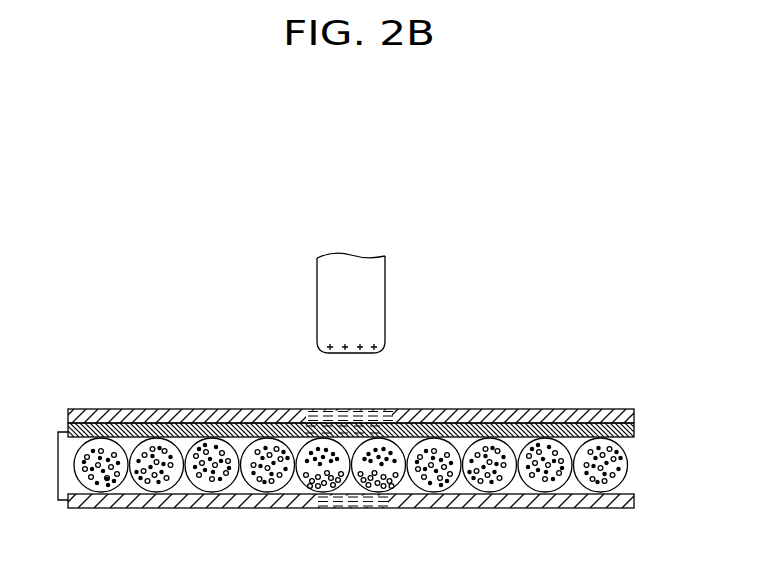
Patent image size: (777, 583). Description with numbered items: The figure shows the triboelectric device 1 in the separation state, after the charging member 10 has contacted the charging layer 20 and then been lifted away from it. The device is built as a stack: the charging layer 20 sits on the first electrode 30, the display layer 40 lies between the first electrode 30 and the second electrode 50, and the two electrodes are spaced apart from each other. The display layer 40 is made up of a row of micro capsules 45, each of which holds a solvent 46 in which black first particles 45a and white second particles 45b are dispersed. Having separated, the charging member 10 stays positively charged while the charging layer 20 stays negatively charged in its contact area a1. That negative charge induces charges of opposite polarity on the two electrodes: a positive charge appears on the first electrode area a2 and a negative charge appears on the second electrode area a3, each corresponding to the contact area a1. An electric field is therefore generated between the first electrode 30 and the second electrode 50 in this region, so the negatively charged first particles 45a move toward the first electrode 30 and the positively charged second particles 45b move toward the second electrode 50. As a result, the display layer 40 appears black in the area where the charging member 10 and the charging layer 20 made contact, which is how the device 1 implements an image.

The triboelectric device 1 is at (653, 320).
The charging member 10 is at (385, 273).
The charging layer 20 is at (634, 416).
The first electrode 30 is at (634, 431).
The display layer 40 is at (388, 460).
The micro capsule 45 is at (295, 494).
The first particles 45a is at (414, 409).
The second particles 45b is at (406, 494).
The solvent 46 is at (106, 490).
The second electrode 50 is at (634, 500).
The contact area a1 is at (320, 410).
The first electrode area a2 is at (290, 411).
The second electrode area a3 is at (355, 506).